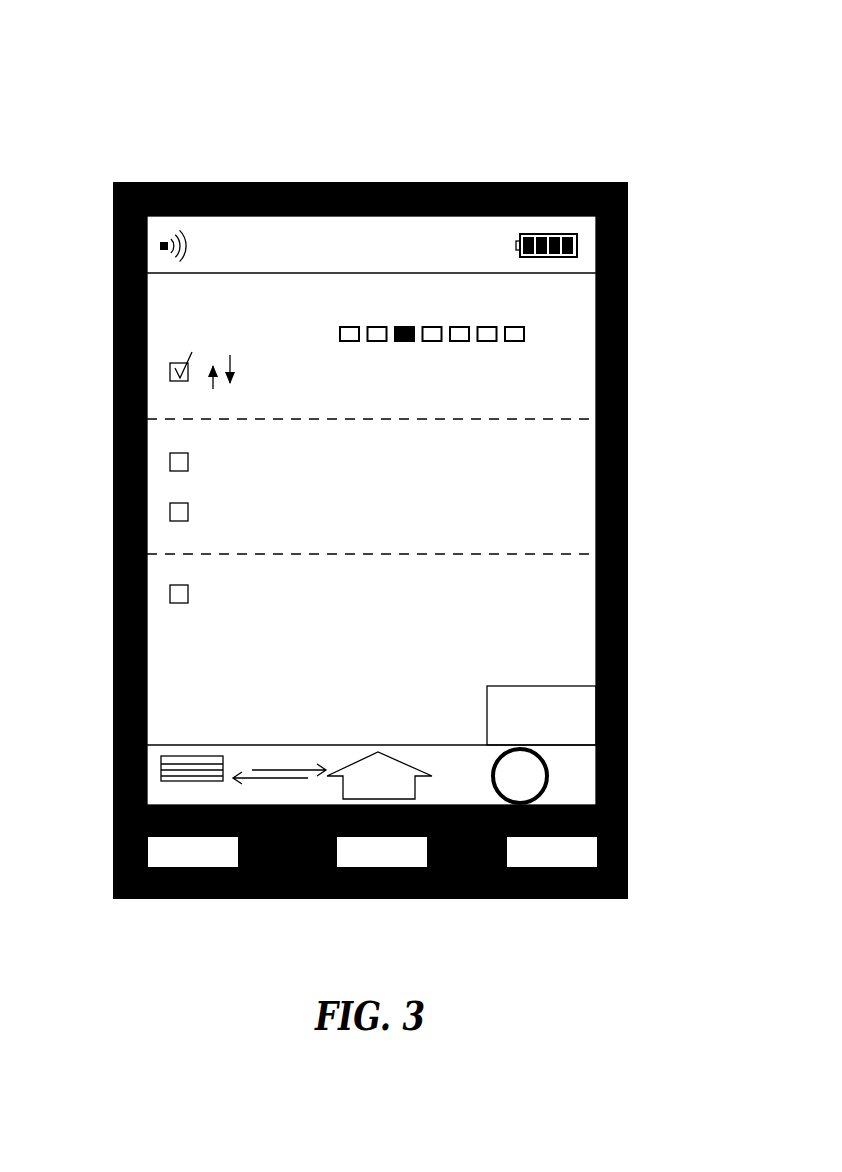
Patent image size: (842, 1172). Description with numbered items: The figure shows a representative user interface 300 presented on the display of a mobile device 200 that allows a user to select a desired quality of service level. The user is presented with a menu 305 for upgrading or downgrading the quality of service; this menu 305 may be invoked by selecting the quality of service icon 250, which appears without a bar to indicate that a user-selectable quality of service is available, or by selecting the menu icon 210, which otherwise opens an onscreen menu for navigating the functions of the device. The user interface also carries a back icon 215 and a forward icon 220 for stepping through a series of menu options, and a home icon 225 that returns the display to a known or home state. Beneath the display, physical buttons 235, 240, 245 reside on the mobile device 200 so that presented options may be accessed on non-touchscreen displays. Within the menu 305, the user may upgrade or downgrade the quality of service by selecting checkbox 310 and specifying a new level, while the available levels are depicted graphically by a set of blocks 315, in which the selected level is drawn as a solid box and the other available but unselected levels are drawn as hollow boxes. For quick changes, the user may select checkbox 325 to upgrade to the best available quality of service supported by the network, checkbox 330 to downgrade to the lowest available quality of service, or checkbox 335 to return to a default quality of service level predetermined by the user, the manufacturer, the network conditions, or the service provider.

The mobile device 200 is at (645, 117).
The menu icon 210 is at (180, 752).
The back icon 215 is at (240, 768).
The forward icon 220 is at (299, 741).
The home icon 225 is at (407, 762).
The button 235 is at (176, 853).
The button 240 is at (369, 853).
The button 245 is at (535, 853).
The QoS icon 250 is at (548, 781).
The user interface 300 is at (575, 295).
The menu 305 is at (456, 276).
The checkbox 310 is at (169, 377).
The set of blocks 315 is at (533, 352).
The checkbox 325 is at (169, 462).
The checkbox 330 is at (169, 514).
The checkbox 335 is at (169, 597).